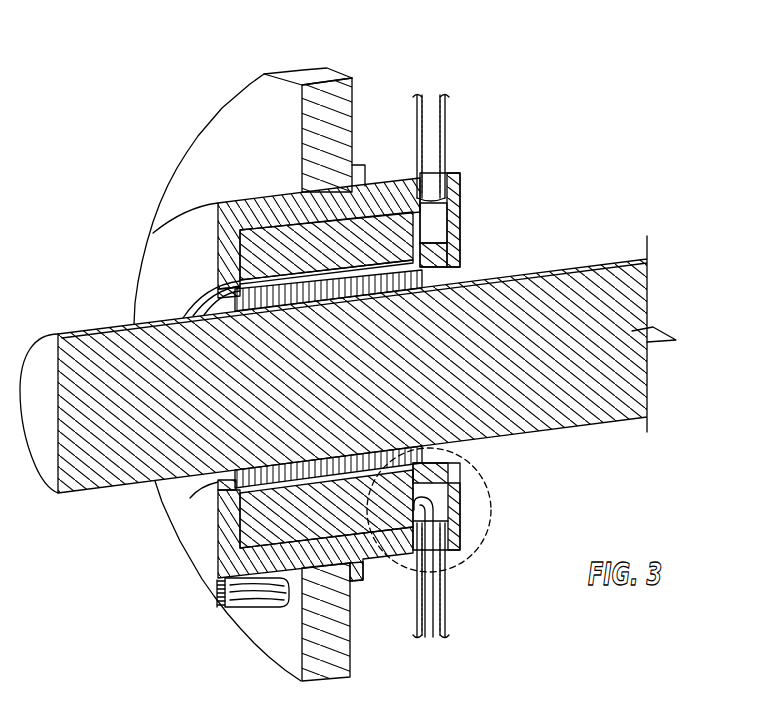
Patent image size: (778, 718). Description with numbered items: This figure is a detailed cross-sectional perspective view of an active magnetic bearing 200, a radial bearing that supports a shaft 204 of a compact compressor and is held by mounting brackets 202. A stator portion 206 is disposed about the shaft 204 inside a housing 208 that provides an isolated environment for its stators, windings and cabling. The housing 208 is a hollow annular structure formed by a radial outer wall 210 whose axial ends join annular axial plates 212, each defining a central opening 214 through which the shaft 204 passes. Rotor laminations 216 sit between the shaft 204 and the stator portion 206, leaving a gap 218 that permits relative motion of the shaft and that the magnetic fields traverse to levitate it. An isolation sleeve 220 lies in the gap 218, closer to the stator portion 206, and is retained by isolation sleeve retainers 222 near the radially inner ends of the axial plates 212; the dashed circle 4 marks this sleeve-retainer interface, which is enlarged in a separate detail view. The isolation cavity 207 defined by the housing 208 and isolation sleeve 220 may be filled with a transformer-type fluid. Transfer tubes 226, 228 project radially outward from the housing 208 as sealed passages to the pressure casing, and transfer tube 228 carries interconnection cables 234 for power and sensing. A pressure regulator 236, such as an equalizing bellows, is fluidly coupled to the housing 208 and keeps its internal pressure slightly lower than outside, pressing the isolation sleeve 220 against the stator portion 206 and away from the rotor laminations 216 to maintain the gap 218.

The active magnetic bearing 200 is at (588, 90).
The mounting brackets 202 is at (225, 110).
The shaft 204 is at (388, 384).
The stator portion 206 is at (372, 204).
The isolation cavity 207 is at (437, 233).
The housing 208 is at (150, 216).
The radial outer wall 210 is at (240, 200).
The annular axial plates 212 is at (463, 190).
The central opening 214 is at (207, 487).
The rotor laminations 216 is at (443, 452).
The gap 218 is at (457, 248).
The isolation sleeve 220 is at (233, 290).
The isolation sleeve retainers 222 is at (200, 487).
The transfer tube 226 is at (448, 122).
The transfer tube 228 is at (447, 613).
The interconnection cables 234 is at (430, 597).
The pressure regulator 236 is at (215, 597).
The detail region of FIG. 4 is at (491, 513).